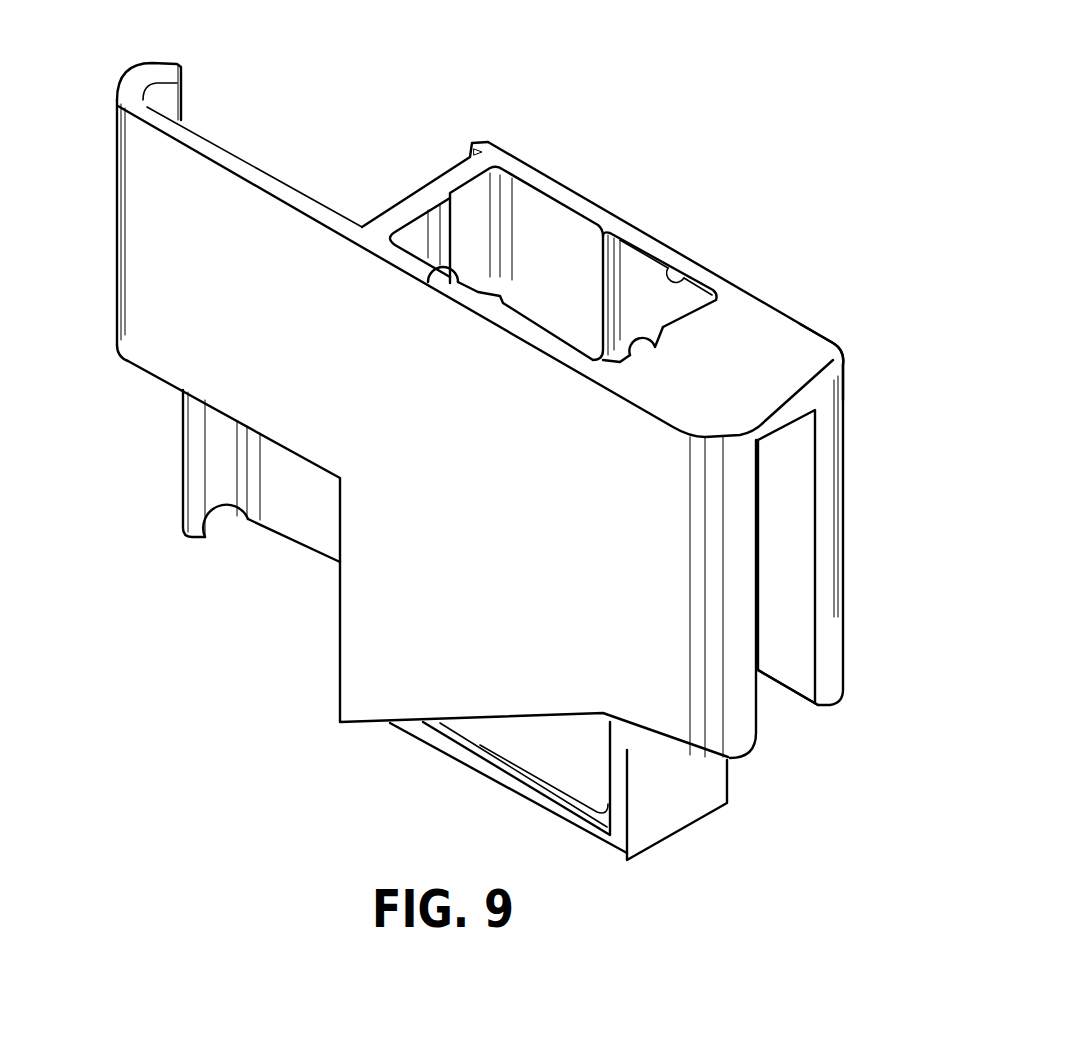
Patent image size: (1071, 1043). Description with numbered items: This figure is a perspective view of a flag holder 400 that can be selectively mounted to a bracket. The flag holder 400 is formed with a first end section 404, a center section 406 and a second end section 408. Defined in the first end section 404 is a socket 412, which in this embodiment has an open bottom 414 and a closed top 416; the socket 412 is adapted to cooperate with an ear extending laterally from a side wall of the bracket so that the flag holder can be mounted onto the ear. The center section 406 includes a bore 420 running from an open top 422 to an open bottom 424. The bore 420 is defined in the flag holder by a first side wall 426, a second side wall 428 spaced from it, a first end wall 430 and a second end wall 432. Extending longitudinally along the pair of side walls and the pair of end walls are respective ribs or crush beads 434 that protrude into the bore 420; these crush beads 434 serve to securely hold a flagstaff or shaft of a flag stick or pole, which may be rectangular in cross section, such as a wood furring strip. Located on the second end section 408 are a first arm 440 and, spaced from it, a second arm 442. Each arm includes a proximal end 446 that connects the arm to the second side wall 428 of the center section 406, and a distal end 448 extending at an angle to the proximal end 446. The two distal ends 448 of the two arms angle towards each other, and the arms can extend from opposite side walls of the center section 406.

The flag holder 400 is at (742, 270).
The first end section 404 is at (830, 352).
The center section 406 is at (580, 196).
The second end section 408 is at (155, 335).
The socket 412 is at (793, 512).
The open bottom 414 is at (772, 652).
The closed top 416 is at (740, 360).
The bore 420 is at (674, 276).
The open top 422 is at (527, 195).
The open bottom 424 is at (507, 740).
The first side wall 426 is at (644, 258).
The second side wall 428 is at (443, 263).
The first end wall 430 is at (630, 358).
The second end wall 432 is at (467, 203).
The crush beads 434 is at (425, 237).
The first arm 440 is at (132, 160).
The second arm 442 is at (310, 515).
The proximal end 446 is at (333, 428).
The distal end 448 is at (152, 72).